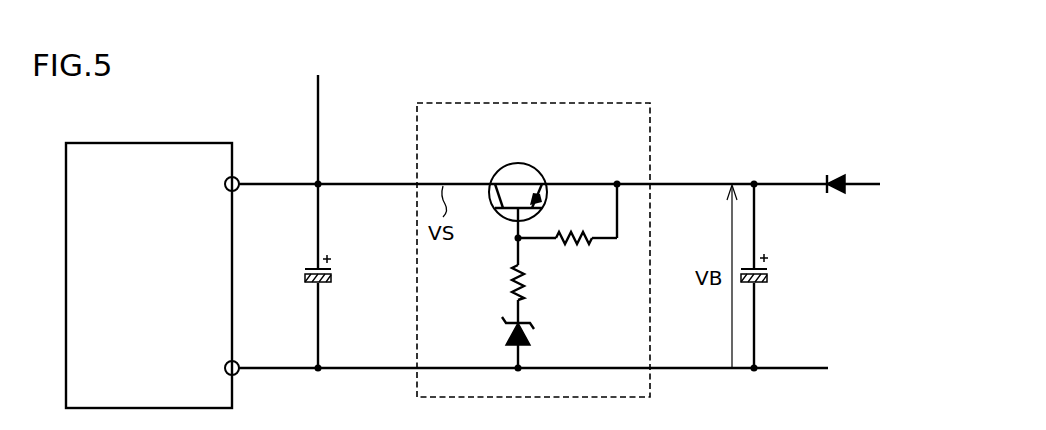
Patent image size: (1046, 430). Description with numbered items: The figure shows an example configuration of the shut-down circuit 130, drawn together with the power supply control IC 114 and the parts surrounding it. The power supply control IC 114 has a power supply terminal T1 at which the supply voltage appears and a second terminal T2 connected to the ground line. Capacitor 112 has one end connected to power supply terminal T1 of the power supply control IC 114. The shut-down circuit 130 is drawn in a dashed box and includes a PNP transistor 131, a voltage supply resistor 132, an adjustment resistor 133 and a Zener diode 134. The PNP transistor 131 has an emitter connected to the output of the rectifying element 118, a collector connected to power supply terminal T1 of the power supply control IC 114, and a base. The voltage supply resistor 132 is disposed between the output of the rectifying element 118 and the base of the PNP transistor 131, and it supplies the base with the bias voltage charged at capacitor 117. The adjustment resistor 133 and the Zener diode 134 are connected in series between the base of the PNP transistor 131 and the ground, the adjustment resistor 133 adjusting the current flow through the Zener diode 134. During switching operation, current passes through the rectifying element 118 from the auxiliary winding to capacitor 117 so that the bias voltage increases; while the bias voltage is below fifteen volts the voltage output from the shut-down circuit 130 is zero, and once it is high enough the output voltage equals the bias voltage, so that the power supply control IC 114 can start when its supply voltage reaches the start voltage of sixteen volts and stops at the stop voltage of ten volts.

The power supply control IC 114 is at (167, 143).
The power supply terminal T1 is at (239, 175).
The GND terminal T2 is at (238, 375).
The capacitor 112 is at (335, 276).
The shut-down circuit 130 is at (607, 102).
The PNP transistor 131 is at (517, 164).
The voltage supply resistor 132 is at (580, 245).
The adjustment resistor 133 is at (525, 288).
The Zener diode 134 is at (506, 331).
The capacitor 117 is at (772, 274).
The rectifying element 118 is at (831, 173).